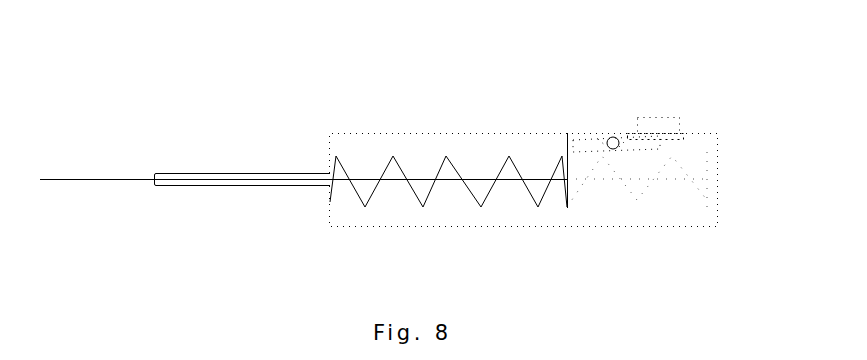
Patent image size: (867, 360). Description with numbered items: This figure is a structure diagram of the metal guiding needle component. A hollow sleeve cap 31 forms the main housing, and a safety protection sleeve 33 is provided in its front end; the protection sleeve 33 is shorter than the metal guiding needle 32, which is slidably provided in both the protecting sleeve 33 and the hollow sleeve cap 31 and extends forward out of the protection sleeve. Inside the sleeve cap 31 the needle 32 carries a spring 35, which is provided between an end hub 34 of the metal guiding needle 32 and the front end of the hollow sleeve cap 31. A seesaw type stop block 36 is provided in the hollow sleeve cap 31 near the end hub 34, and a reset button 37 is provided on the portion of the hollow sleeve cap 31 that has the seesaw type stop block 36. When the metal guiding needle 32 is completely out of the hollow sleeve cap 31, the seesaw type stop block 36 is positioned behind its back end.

The hollow sleeve cap 31 is at (488, 133).
The metal guiding needle 32 is at (116, 179).
The safety protection sleeve 33 is at (273, 173).
The end hub 34 is at (575, 142).
The spring screw 35 is at (401, 168).
The seesaw type stop block 36 is at (650, 138).
The reset button 37 is at (672, 117).